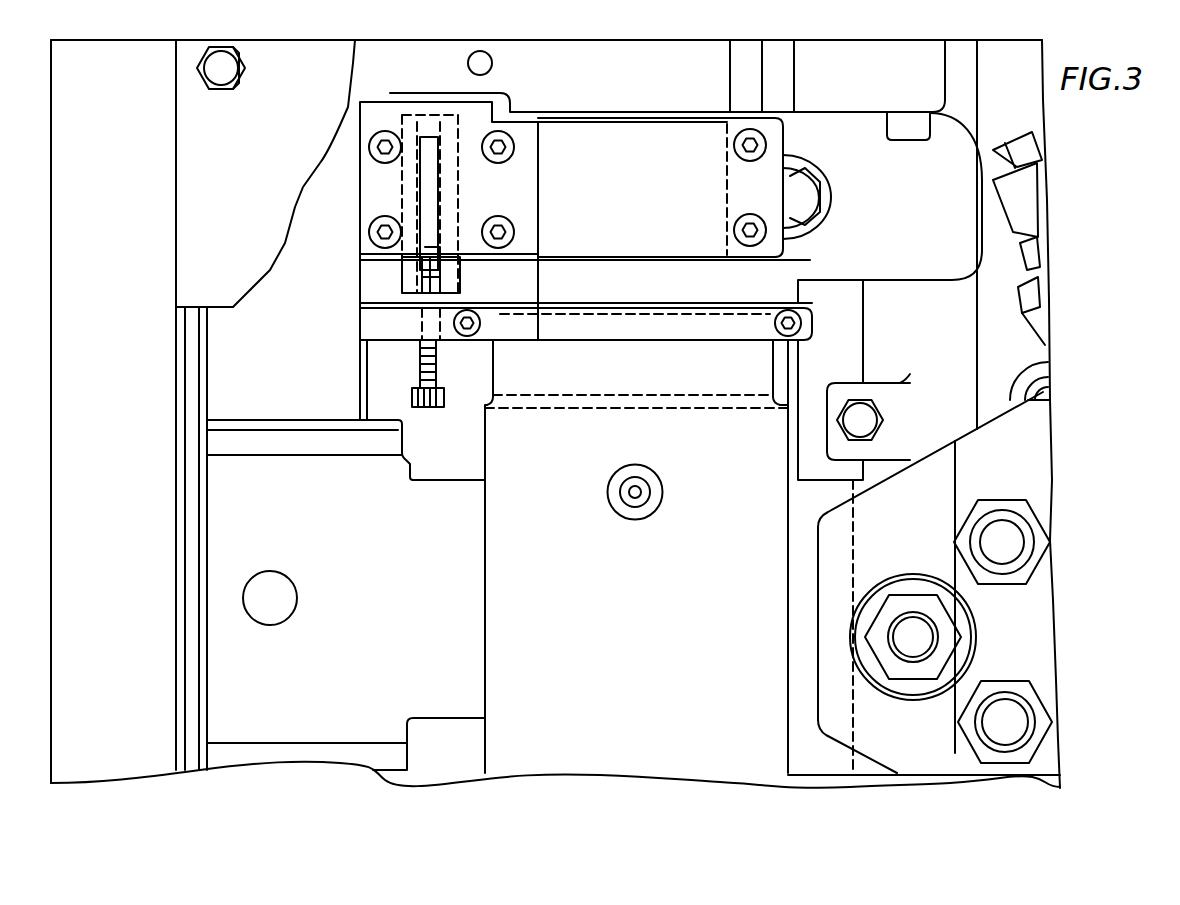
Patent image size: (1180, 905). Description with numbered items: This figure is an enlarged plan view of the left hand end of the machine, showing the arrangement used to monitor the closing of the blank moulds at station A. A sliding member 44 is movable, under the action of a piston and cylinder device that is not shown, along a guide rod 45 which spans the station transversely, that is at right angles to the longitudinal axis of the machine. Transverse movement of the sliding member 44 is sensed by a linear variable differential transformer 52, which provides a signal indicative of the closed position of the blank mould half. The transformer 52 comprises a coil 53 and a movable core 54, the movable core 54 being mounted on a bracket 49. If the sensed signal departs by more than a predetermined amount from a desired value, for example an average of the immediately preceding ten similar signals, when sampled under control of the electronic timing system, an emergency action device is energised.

The sliding member 44 is at (640, 599).
The guide rod 45 is at (789, 300).
The bracket 49 is at (632, 318).
The linear variable differential transformer 52 is at (388, 279).
The coil 53 is at (457, 200).
The movable core 54 is at (413, 180).